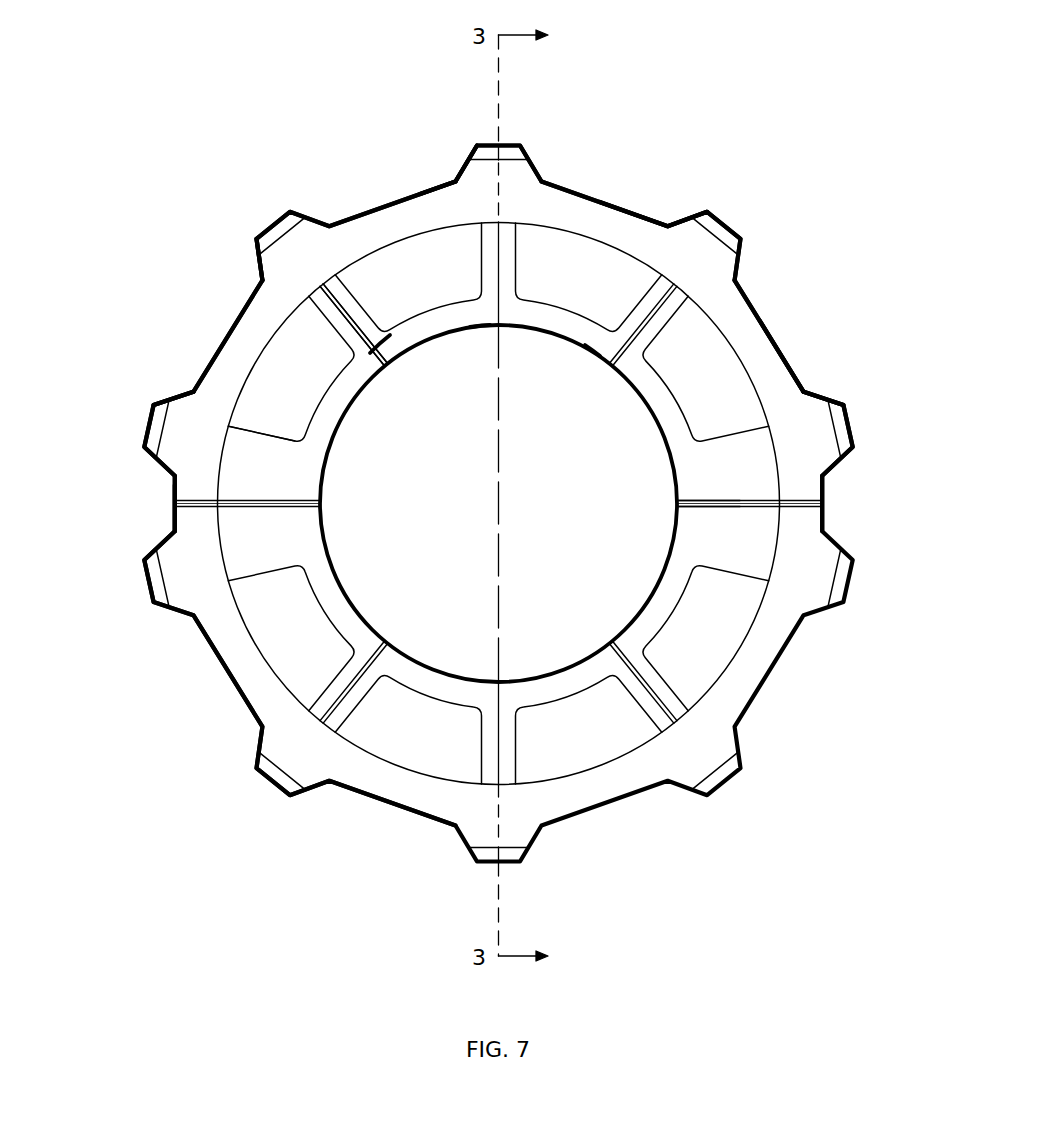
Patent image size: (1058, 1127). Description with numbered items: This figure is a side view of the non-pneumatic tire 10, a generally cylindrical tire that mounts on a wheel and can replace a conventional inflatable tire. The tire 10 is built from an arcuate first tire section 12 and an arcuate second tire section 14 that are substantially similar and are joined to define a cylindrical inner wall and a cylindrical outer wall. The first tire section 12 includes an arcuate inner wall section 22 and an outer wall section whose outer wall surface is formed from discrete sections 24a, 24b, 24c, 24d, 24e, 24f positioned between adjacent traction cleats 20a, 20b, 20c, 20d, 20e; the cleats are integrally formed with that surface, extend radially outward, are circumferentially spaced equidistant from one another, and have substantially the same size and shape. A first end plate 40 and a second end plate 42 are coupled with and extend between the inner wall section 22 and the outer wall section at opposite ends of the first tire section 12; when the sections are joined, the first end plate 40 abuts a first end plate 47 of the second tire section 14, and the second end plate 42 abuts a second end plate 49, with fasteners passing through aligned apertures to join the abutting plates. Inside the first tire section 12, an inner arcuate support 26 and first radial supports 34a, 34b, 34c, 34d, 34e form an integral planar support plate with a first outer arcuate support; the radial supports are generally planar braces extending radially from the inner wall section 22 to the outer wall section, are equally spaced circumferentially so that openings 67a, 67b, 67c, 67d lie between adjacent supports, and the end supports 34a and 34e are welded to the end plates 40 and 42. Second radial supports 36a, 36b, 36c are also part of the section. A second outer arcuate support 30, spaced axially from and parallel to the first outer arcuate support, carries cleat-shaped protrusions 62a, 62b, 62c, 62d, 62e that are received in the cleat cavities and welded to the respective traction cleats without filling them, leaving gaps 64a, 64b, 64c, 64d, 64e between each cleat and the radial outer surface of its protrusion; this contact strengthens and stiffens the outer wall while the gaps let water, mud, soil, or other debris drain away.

The non-pneumatic tire 10 is at (320, 112).
The first tire section 12 is at (229, 335).
The second tire section 14 is at (222, 662).
The traction cleat 20a is at (152, 410).
The traction cleat 20b is at (265, 226).
The traction cleat 20c is at (507, 143).
The traction cleat 20d is at (732, 225).
The traction cleat 20e is at (848, 415).
The inner wall section 22 is at (432, 340).
The outer wall surface section 24a is at (176, 489).
The outer wall surface section 24b is at (203, 375).
The outer wall surface section 24c is at (393, 202).
The outer wall surface section 24d is at (553, 182).
The outer wall surface section 24e is at (748, 273).
The outer wall surface section 24f is at (826, 488).
The inner arcuate support 26 is at (322, 430).
The second outer arcuate support 30 is at (652, 297).
The first radial support 34a is at (175, 525).
The first radial support 34b is at (330, 313).
The first radial support 34c is at (480, 235).
The first radial support 34d is at (622, 222).
The first radial support 34e is at (786, 372).
The second radial support 36a is at (372, 357).
The second radial support 36b is at (477, 343).
The second radial support 36c is at (608, 350).
The first end plate 40 is at (300, 565).
The second end plate 42 is at (826, 507).
The first end plate 47 is at (325, 518).
The second end plate 49 is at (678, 506).
The cleat-shaped protrusion 62a is at (172, 408).
The cleat-shaped protrusion 62b is at (257, 262).
The cleat-shaped protrusion 62c is at (467, 165).
The cleat-shaped protrusion 62d is at (687, 223).
The cleat-shaped protrusion 62e is at (826, 398).
The gap 64a is at (150, 445).
The gap 64b is at (292, 208).
The gap 64c is at (528, 148).
The gap 64d is at (746, 238).
The gap 64e is at (851, 444).
The opening 67a is at (323, 382).
The opening 67b is at (378, 277).
The opening 67c is at (565, 255).
The opening 67d is at (712, 352).